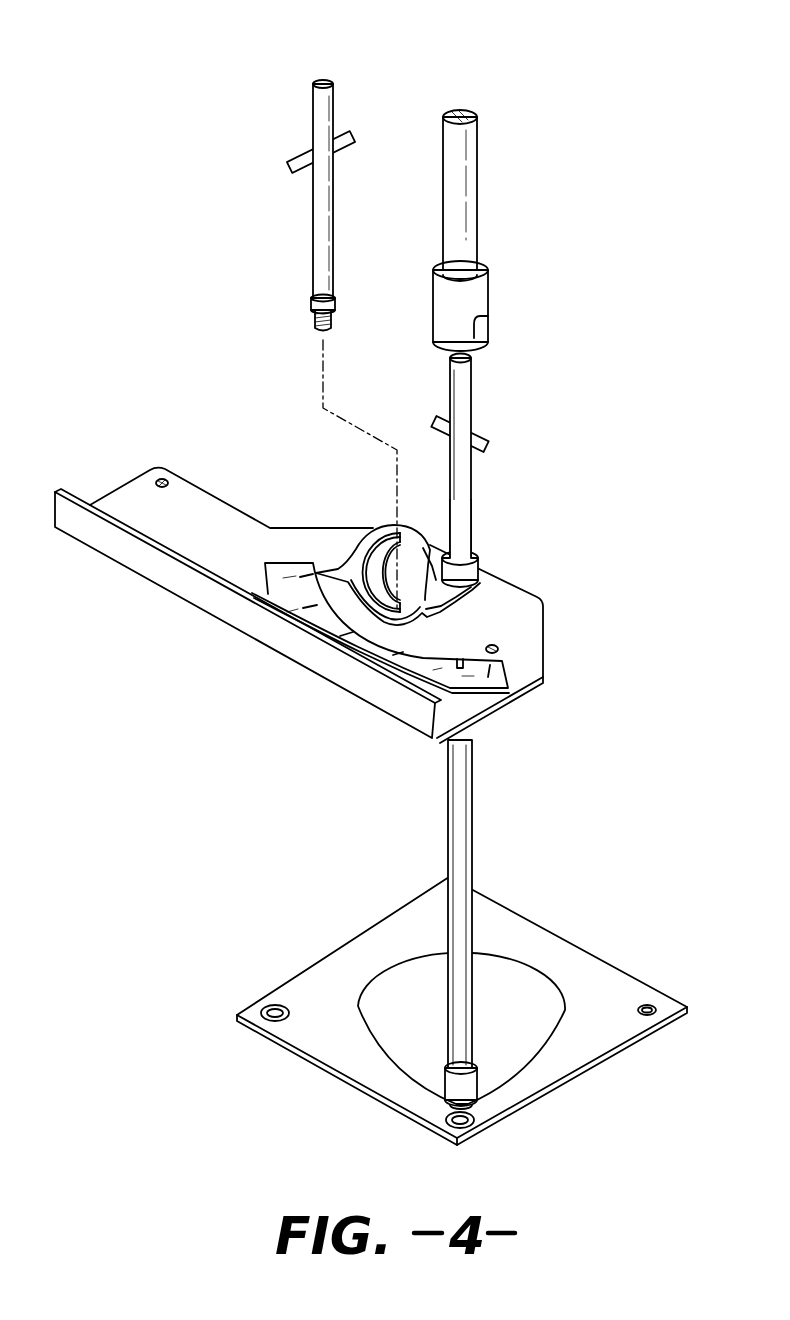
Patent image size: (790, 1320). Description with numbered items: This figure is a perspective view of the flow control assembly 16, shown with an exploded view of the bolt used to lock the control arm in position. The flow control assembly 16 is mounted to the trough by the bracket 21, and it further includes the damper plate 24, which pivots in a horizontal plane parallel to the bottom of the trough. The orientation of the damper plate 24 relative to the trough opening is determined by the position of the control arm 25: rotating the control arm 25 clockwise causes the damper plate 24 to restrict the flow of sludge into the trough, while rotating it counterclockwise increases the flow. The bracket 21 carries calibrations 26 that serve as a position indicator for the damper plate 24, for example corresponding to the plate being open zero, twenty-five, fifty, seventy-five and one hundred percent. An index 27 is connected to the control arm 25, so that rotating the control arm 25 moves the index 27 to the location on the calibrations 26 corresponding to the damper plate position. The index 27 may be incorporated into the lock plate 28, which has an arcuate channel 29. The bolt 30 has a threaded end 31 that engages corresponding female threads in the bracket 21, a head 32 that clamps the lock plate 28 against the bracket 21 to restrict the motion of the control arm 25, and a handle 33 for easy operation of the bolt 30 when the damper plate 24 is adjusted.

The flow control assembly 16 is at (547, 620).
The bracket 21 is at (187, 535).
The damper plate 24 is at (405, 988).
The control arm 25 is at (472, 847).
The calibrations 26 is at (290, 600).
The index 27 is at (337, 571).
The lock plate 28 is at (430, 552).
The arcuate channel 29 is at (383, 543).
The bolt 30 is at (291, 190).
The threaded end 31 is at (312, 330).
The head 32 is at (308, 303).
The handle 33 is at (300, 156).